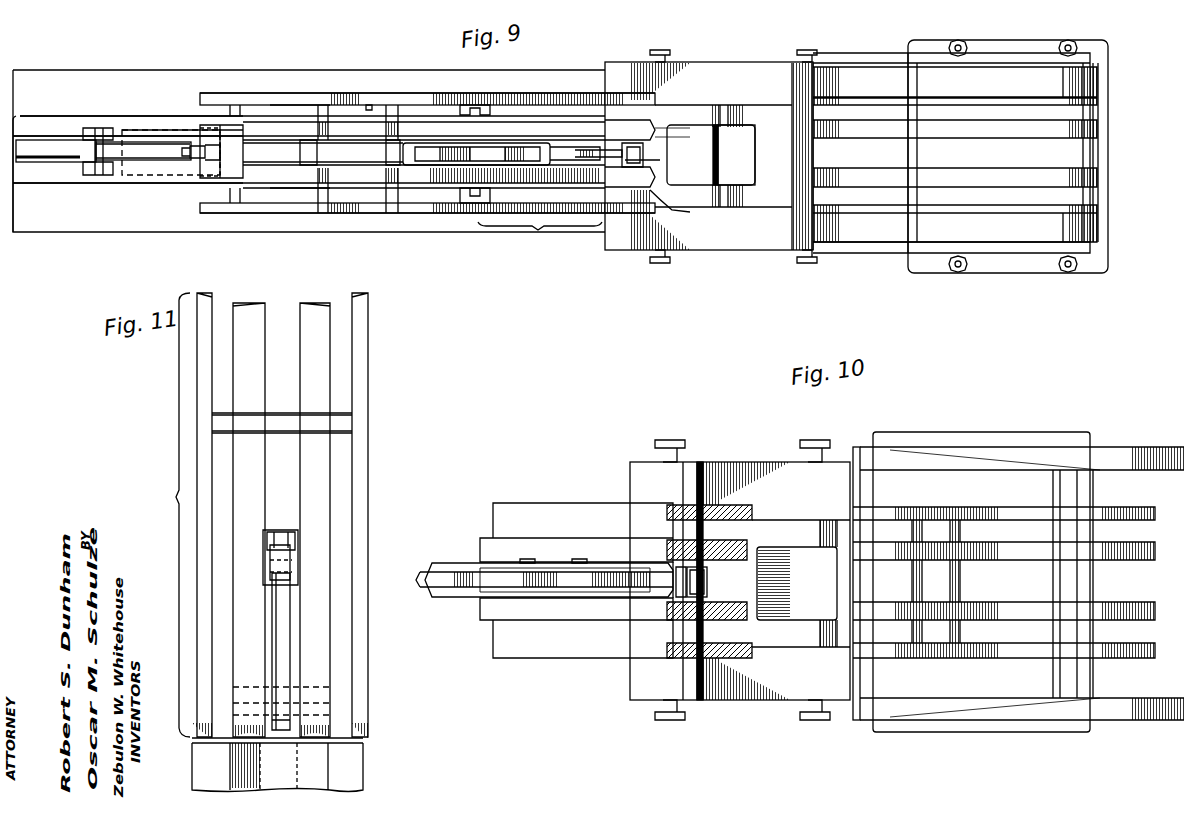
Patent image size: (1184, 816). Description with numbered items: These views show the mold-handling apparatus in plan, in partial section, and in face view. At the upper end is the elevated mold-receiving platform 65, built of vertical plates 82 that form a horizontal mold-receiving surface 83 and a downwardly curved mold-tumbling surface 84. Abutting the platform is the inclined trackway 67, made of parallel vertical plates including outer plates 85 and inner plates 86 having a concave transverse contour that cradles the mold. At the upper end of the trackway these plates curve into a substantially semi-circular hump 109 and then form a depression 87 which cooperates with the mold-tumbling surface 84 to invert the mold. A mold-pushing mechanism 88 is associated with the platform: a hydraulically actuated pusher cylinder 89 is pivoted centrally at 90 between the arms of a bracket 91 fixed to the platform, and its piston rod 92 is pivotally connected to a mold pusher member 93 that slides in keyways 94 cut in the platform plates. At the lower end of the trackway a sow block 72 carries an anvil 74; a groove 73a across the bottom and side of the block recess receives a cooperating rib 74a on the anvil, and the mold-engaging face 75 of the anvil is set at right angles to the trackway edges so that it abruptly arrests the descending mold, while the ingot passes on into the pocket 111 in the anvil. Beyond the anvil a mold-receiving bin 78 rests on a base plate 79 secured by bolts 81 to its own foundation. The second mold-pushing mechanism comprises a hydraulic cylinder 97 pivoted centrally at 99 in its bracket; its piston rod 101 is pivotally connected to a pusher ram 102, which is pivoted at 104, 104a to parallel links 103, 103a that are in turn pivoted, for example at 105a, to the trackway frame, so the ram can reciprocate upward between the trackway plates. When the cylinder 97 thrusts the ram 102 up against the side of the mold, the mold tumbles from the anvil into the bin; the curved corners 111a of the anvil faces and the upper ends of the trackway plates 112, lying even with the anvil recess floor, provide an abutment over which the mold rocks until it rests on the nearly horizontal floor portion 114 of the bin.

In FIG. 9, the mold-receiving platform 65 is at (160, 186).
In FIG. 9, the inclined trackway 67 is at (548, 232).
In FIG. 11, the inclined trackway 67 is at (160, 515).
In FIG. 9, the sow block 72 is at (712, 68).
In FIG. 10, the sow block 72 is at (755, 462).
In FIG. 9, the groove 73a is at (645, 150).
In FIG. 10, the groove 73a is at (678, 588).
In FIG. 11, the groove 73a is at (283, 766).
In FIG. 9, the anvil 74 is at (735, 103).
In FIG. 10, the anvil 74 is at (806, 518).
In FIG. 11, the anvil 74 is at (277, 767).
In FIG. 9, the rib 74a is at (660, 156).
In FIG. 10, the rib 74a is at (680, 620).
In FIG. 9, the mold-engaging face 75 is at (698, 112).
In FIG. 10, the mold-engaging face 75 is at (790, 535).
In FIG. 11, the mold-engaging face 75 is at (363, 740).
In FIG. 9, the mold-receiving bin 78 is at (1015, 205).
In FIG. 10, the mold-receiving bin 78 is at (978, 548).
In FIG. 9, the base plate 79 is at (1035, 267).
In FIG. 9, the bolts 81 is at (1065, 42).
In FIG. 9, the vertical plates 82 is at (258, 97).
In FIG. 9, the horizontal mold-receiving surface 83 is at (330, 78).
In FIG. 9, the mold-tumbling surface 84 is at (372, 86).
In FIG. 9, the outer plates 85 is at (540, 96).
In FIG. 10, the outer plates 85 is at (722, 503).
In FIG. 11, the outer plates 85 is at (200, 380).
In FIG. 9, the inner plates 86 is at (629, 153).
In FIG. 10, the inner plates 86 is at (743, 586).
In FIG. 11, the inner plates 86 is at (310, 370).
In FIG. 9, the depression 87 is at (370, 98).
In FIG. 9, the mold-pushing mechanism 88 is at (205, 114).
In FIG. 9, the pusher cylinder 89 is at (50, 160).
In FIG. 9, the pivot 90 is at (82, 160).
In FIG. 9, the bracket 91 is at (88, 132).
In FIG. 9, the piston rod 92 is at (198, 158).
In FIG. 9, the mold pusher member 93 is at (228, 178).
In FIG. 9, the keyways 94 is at (130, 178).
In FIG. 9, the hydraulic cylinder 97 is at (378, 165).
In FIG. 9, the pivot 99 is at (303, 165).
In FIG. 10, the piston rod 101 is at (422, 572).
In FIG. 9, the pusher ram 102 is at (540, 150).
In FIG. 10, the pusher ram 102 is at (484, 542).
In FIG. 11, the pusher ram 102 is at (298, 565).
In FIG. 10, the parallel link 103 is at (490, 585).
In FIG. 9, the parallel link 103a is at (565, 150).
In FIG. 10, the parallel link 103a is at (568, 585).
In FIG. 11, the parallel link 103a is at (283, 630).
In FIG. 9, the pivot 104 is at (432, 140).
In FIG. 10, the pivot 104 is at (528, 558).
In FIG. 11, the pivot 104 is at (262, 565).
In FIG. 9, the pivot 104a is at (479, 186).
In FIG. 10, the pivot 104a is at (582, 558).
In FIG. 11, the pivot 104a is at (298, 548).
In FIG. 9, the pivot 105a is at (570, 185).
In FIG. 9, the hump 109 is at (436, 92).
In FIG. 11, the hump 109 is at (300, 308).
In FIG. 9, the pocket 111 is at (716, 182).
In FIG. 10, the pocket 111 is at (810, 589).
In FIG. 11, the pocket 111 is at (247, 766).
In FIG. 9, the curved corners 111a is at (722, 105).
In FIG. 10, the curved corners 111a is at (830, 518).
In FIG. 9, the trackway plates 112 is at (765, 100).
In FIG. 10, the trackway plates 112 is at (893, 512).
In FIG. 9, the floor portion 114 is at (998, 180).
In FIG. 10, the floor portion 114 is at (1040, 605).